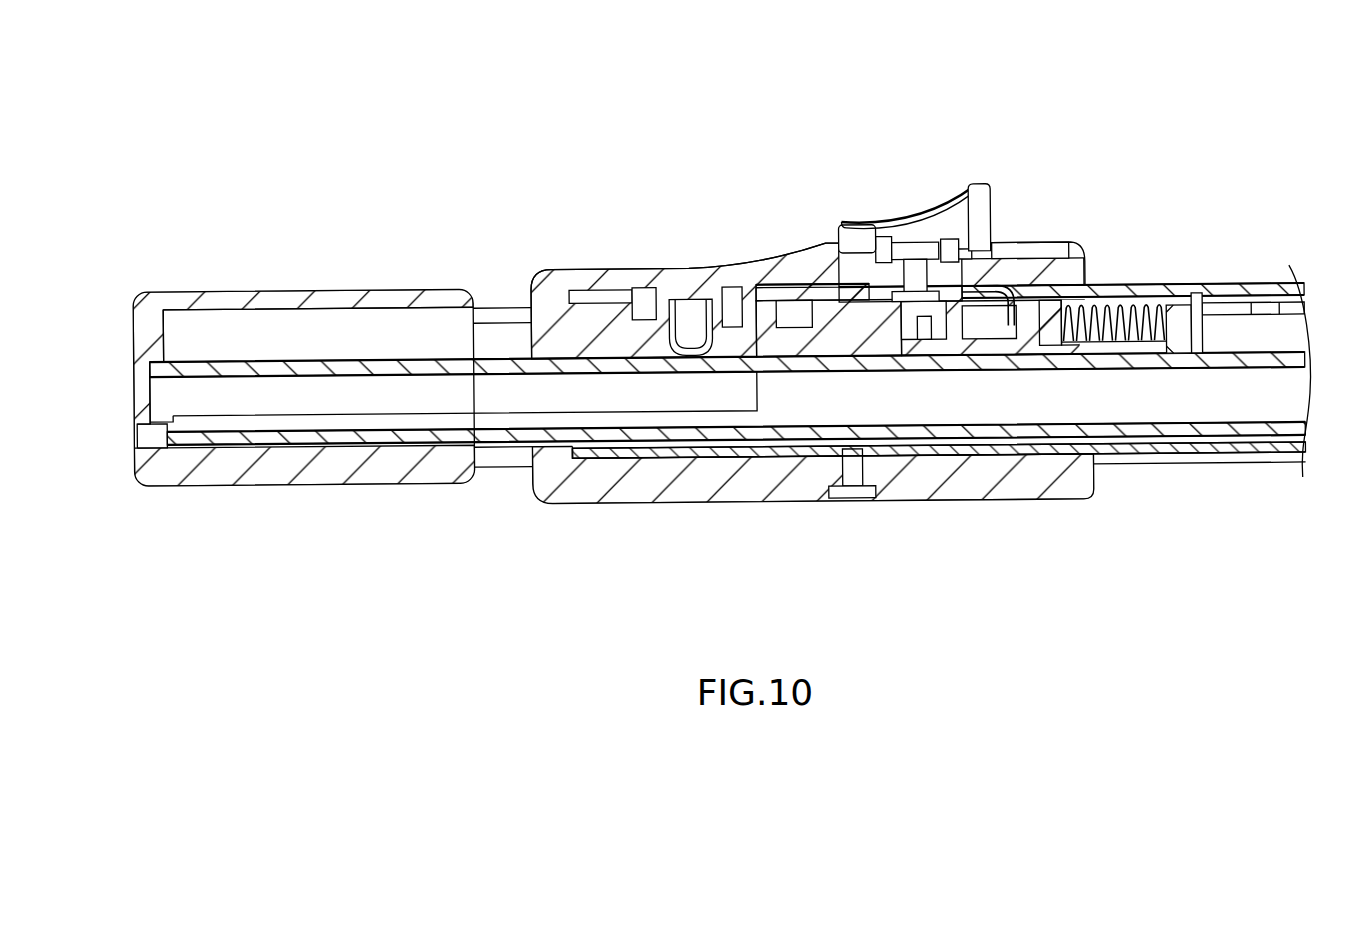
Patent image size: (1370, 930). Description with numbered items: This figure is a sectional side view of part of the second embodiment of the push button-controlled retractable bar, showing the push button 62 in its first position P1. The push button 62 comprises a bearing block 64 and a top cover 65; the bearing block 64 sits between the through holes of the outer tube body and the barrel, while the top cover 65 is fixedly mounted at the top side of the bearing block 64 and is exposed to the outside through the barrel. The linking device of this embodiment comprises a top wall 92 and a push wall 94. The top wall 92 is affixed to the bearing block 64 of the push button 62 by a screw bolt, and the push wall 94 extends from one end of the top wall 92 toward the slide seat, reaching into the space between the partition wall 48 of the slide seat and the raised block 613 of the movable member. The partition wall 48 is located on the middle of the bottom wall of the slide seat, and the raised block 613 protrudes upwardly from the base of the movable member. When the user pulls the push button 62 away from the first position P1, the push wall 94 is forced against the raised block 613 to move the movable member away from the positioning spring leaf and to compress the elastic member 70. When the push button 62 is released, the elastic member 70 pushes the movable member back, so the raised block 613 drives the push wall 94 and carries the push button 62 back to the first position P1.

The push button 62 is at (879, 196).
The top cover 65 is at (847, 282).
The bearing block 64 is at (907, 188).
The partition wall 48 is at (960, 290).
The top wall 92 is at (784, 284).
The push wall 94 is at (1017, 310).
The raised block 613 is at (1053, 307).
The elastic member 70 is at (1153, 310).
The first position P1 is at (912, 166).